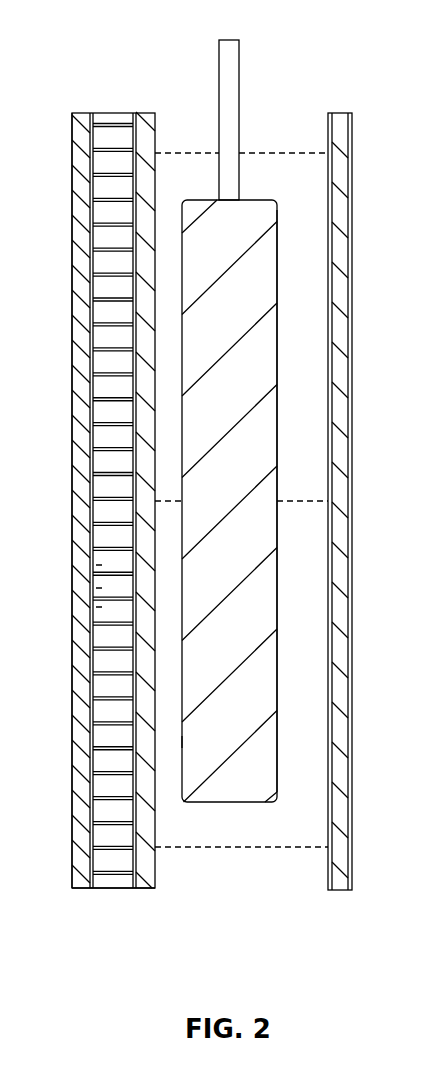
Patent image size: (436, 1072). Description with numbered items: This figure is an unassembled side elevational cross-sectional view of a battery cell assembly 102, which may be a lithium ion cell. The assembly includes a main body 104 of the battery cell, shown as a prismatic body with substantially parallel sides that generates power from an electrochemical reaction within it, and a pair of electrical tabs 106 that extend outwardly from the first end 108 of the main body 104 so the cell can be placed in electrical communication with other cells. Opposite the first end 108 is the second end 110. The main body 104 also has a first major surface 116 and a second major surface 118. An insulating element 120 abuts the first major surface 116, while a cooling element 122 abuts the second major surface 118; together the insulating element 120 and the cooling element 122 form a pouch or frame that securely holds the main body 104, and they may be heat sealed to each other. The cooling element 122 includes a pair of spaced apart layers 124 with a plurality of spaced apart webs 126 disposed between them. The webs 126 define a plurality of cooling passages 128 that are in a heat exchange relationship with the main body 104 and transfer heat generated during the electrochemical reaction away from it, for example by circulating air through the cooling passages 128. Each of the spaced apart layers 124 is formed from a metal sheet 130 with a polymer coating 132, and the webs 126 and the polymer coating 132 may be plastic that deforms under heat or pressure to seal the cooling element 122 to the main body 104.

The battery cell assembly 102 is at (330, 36).
The main body 104 is at (244, 345).
The electrical tabs 106 is at (240, 52).
The first end 108 is at (283, 131).
The second end 110 is at (232, 876).
The first major surface 116 is at (279, 258).
The second major surface 118 is at (181, 742).
The insulating element 120 is at (352, 132).
The cooling element 122 is at (72, 677).
The spaced apart layers 124 is at (100, 846).
The webs 126 is at (105, 803).
The cooling passages 128 is at (98, 607).
The metal sheet 130 is at (79, 889).
The polymer coating 132 is at (72, 873).